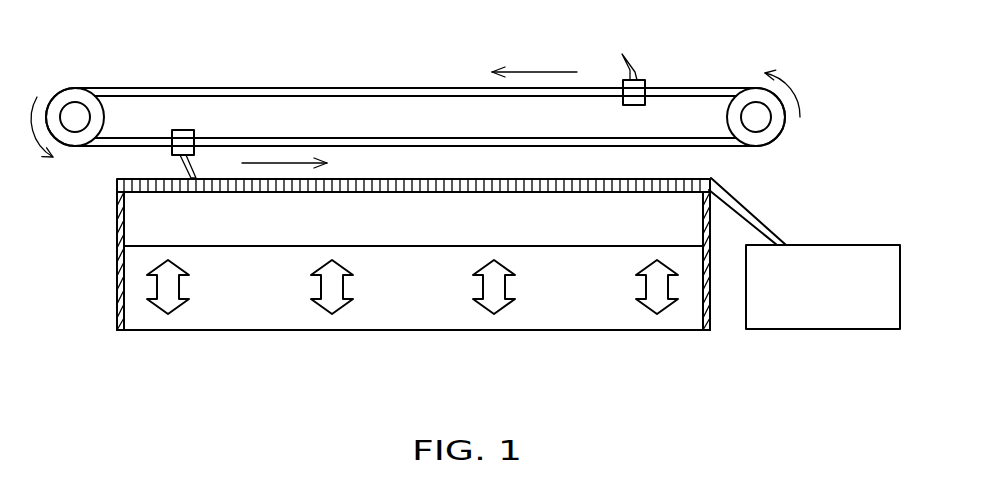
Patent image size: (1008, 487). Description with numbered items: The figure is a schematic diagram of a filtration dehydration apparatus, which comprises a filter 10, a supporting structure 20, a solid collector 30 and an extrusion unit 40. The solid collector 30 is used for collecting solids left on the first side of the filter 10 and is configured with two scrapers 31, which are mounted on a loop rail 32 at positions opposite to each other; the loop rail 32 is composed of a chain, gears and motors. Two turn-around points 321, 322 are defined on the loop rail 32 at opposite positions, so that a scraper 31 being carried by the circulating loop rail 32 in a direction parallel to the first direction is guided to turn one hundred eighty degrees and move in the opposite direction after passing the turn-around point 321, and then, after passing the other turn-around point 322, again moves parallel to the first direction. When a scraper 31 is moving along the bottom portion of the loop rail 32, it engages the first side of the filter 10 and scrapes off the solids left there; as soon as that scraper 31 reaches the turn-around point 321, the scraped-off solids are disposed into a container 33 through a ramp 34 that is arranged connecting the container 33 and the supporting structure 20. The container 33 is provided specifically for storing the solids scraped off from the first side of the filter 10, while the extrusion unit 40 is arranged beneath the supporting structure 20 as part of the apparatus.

The filter 10 is at (593, 175).
The supporting structure 20 is at (117, 222).
The solid collector 30 is at (452, 101).
The scraper 31 is at (180, 168).
The loop rail 32 is at (312, 142).
The turn-around point 321 is at (762, 120).
The turn-around point 322 is at (58, 100).
The container 33 is at (850, 255).
The ramp 34 is at (745, 213).
The extrusion unit 40 is at (275, 320).